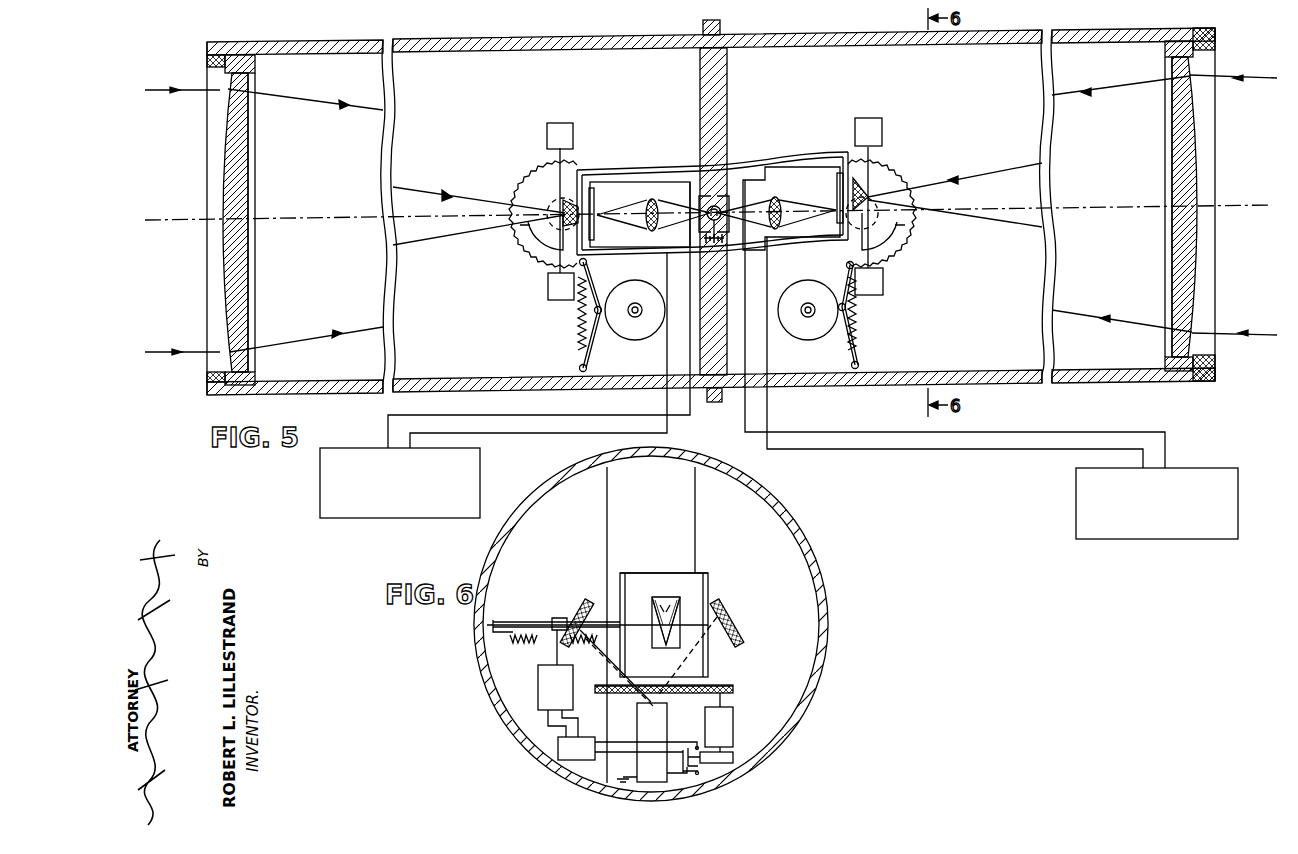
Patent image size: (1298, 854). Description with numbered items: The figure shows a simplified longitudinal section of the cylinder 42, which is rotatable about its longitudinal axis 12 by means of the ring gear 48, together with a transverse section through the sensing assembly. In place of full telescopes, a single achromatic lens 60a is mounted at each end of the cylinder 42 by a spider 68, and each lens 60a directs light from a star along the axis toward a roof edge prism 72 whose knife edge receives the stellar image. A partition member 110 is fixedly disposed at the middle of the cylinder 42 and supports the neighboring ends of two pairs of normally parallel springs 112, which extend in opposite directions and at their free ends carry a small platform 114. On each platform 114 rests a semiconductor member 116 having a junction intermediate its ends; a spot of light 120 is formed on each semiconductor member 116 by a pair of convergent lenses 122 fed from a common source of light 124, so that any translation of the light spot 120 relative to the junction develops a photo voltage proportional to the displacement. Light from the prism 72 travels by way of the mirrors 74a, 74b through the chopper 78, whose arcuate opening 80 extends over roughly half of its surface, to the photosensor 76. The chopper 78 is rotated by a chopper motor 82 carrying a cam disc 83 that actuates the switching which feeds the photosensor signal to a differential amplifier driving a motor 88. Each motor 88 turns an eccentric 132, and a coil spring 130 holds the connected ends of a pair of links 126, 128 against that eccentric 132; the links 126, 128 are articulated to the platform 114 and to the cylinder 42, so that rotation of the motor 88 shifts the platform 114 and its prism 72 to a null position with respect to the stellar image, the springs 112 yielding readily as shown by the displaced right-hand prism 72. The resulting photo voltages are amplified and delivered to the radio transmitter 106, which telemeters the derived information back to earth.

In FIG. 5, the optical axis 12 is at (1006, 208).
In FIG. 5, the cylinder 42 is at (560, 40).
In FIG. 6, the cylinder 42 is at (802, 720).
In FIG. 5, the ring gear 48 is at (722, 28).
In FIG. 5, the achromatic lens 60a is at (216, 224).
In FIG. 5, the spider 68 is at (252, 378).
In FIG. 5, the roof edge prism 72 is at (563, 226).
In FIG. 6, the roof edge prism 72 is at (658, 606).
In FIG. 5, the mirror 74a is at (573, 136).
In FIG. 6, the mirror 74a is at (580, 605).
In FIG. 5, the mirror 74b is at (560, 300).
In FIG. 6, the mirror 74b is at (730, 608).
In FIG. 5, the photosensor 76 is at (553, 206).
In FIG. 6, the photosensor 76 is at (663, 737).
In FIG. 5, the chopper 78 is at (516, 182).
In FIG. 6, the chopper 78 is at (604, 686).
In FIG. 5, the opening 80 is at (535, 246).
In FIG. 6, the opening 80 is at (622, 693).
In FIG. 6, the chopper motor 82 is at (733, 728).
In FIG. 6, the cam disc 83 is at (733, 762).
In FIG. 6, the motor 88 is at (541, 701).
In FIG. 5, the radio transmitter 106 is at (483, 478).
In FIG. 5, the partition member 110 is at (730, 142).
In FIG. 6, the partition member 110 is at (698, 537).
In FIG. 5, the springs 112 is at (635, 167).
In FIG. 6, the springs 112 is at (618, 590).
In FIG. 5, the platform 114 is at (582, 170).
In FIG. 6, the platform 114 is at (671, 581).
In FIG. 5, the semiconductor member 116 is at (838, 200).
In FIG. 5, the spot of light 120 is at (592, 224).
In FIG. 5, the convergent lens 122 is at (650, 207).
In FIG. 5, the source of light 124 is at (714, 205).
In FIG. 5, the link 126 is at (586, 280).
In FIG. 5, the link 128 is at (592, 340).
In FIG. 6, the link 128 is at (516, 620).
In FIG. 5, the coil spring 130 is at (578, 330).
In FIG. 5, the eccentric 132 is at (636, 292).
In FIG. 6, the eccentric 132 is at (553, 649).